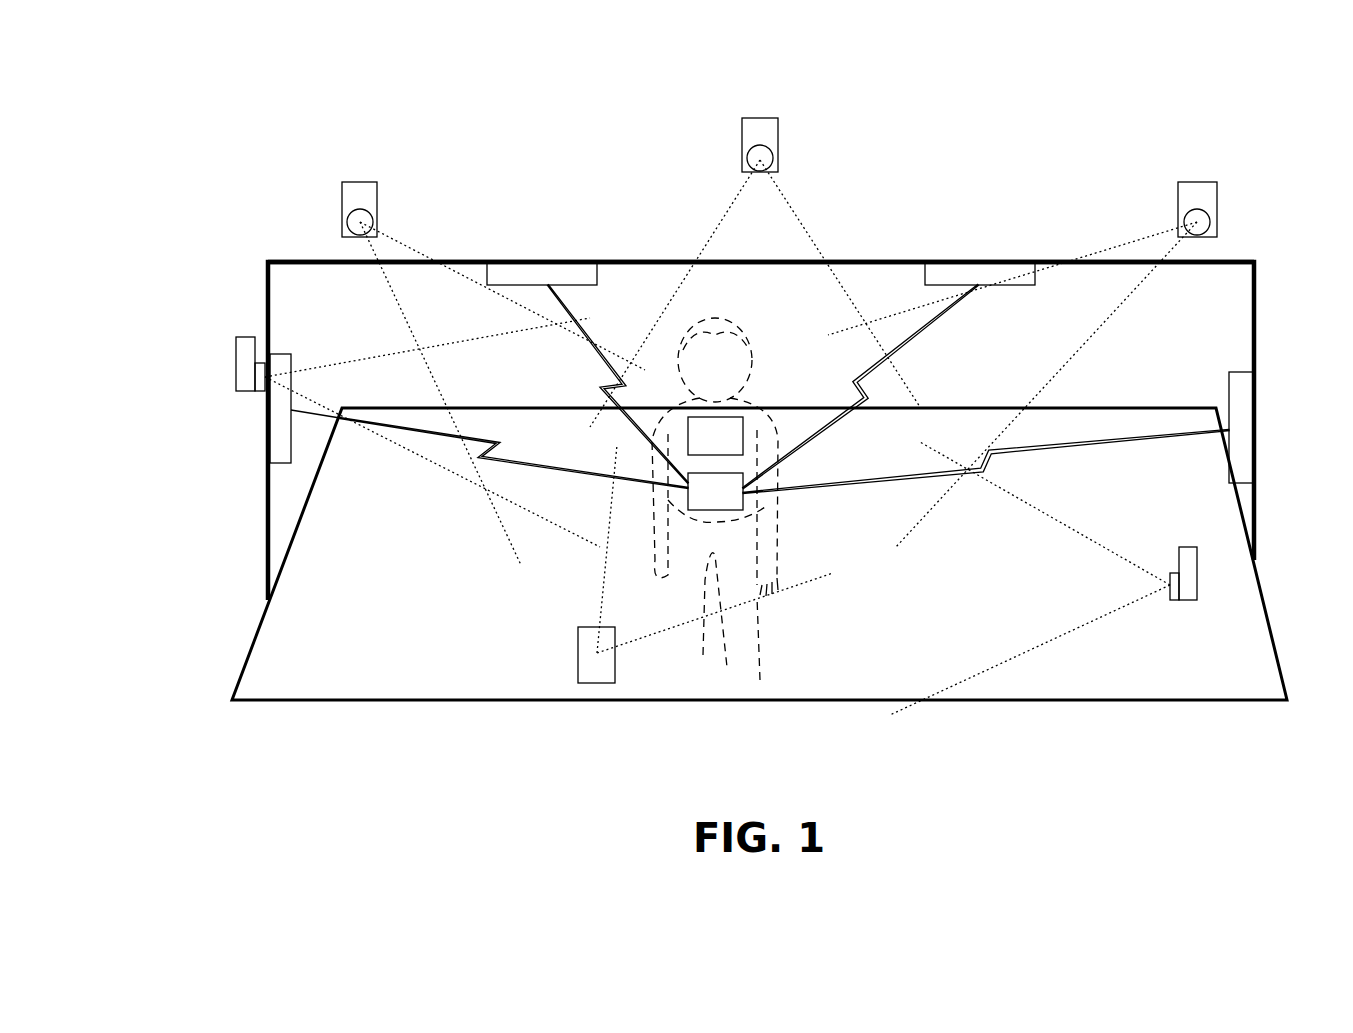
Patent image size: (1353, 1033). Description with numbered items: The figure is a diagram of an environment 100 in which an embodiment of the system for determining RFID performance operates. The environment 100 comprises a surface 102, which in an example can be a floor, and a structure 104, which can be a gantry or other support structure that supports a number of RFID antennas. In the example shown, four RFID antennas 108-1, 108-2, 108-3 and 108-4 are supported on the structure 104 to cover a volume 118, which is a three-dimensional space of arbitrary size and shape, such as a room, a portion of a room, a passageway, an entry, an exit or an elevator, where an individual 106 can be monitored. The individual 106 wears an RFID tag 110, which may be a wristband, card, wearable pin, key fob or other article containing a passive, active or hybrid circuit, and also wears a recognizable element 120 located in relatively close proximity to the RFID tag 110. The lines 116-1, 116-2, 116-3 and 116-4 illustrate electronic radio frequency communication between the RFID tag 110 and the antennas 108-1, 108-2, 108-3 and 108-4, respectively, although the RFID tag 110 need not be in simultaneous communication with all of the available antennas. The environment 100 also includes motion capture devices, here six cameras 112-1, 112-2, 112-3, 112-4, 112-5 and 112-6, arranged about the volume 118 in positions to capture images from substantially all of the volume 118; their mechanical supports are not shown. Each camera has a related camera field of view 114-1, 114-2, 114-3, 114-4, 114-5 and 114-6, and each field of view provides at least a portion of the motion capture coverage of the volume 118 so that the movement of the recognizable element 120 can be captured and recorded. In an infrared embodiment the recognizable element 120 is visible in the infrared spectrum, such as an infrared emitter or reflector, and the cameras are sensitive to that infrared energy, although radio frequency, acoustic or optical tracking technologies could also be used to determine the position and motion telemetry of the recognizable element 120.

The environment 100 is at (207, 58).
The surface 102 is at (310, 691).
The structure 104 is at (268, 510).
The individual 106 is at (735, 377).
The RFID antenna 108-1 is at (1228, 455).
The RFID antenna 108-2 is at (925, 275).
The RFID antenna 108-3 is at (596, 272).
The RFID antenna 108-4 is at (297, 442).
The RFID tag 110 is at (748, 500).
The camera 112-1 is at (578, 650).
The camera 112-2 is at (236, 341).
The camera 112-3 is at (362, 182).
The camera 112-4 is at (760, 118).
The camera 112-5 is at (1197, 182).
The camera 112-6 is at (1198, 573).
The camera field of view 114-1 is at (666, 619).
The camera field of view 114-2 is at (402, 397).
The camera field of view 114-3 is at (466, 302).
The camera field of view 114-4 is at (788, 252).
The camera field of view 114-5 is at (1106, 299).
The camera field of view 114-6 is at (1103, 590).
The line 116-1 is at (922, 463).
The line 116-2 is at (920, 345).
The line 116-3 is at (603, 386).
The line 116-4 is at (510, 450).
The volume 118 is at (352, 313).
The recognizable element 120 is at (745, 430).